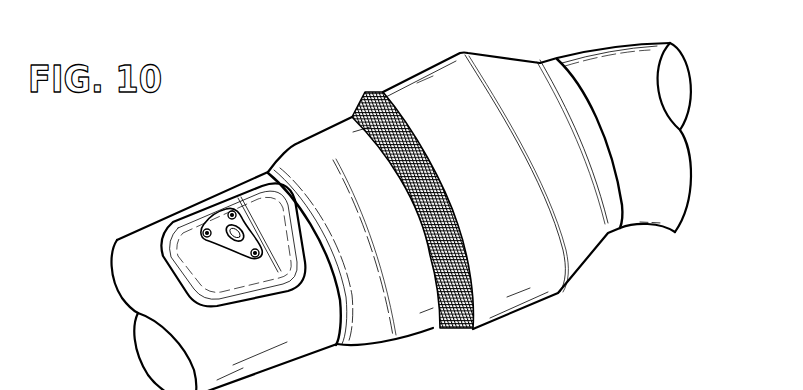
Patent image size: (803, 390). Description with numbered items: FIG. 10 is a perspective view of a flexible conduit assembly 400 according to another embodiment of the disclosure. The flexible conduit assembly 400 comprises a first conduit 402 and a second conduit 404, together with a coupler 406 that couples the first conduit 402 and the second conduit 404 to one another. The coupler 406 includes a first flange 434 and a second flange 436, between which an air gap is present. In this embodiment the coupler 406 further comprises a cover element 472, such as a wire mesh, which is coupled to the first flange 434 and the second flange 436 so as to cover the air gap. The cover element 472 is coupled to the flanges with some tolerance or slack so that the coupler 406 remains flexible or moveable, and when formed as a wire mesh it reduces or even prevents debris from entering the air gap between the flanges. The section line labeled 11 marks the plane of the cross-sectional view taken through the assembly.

The flexible conduit assembly 400 is at (690, 42).
The first conduit 402 is at (619, 66).
The second conduit 404 is at (143, 247).
The coupler 406 is at (463, 46).
The first flange 434 is at (472, 92).
The second flange 436 is at (332, 143).
The cover element 472 is at (357, 105).
The section line 11- 11 is at (280, 222).